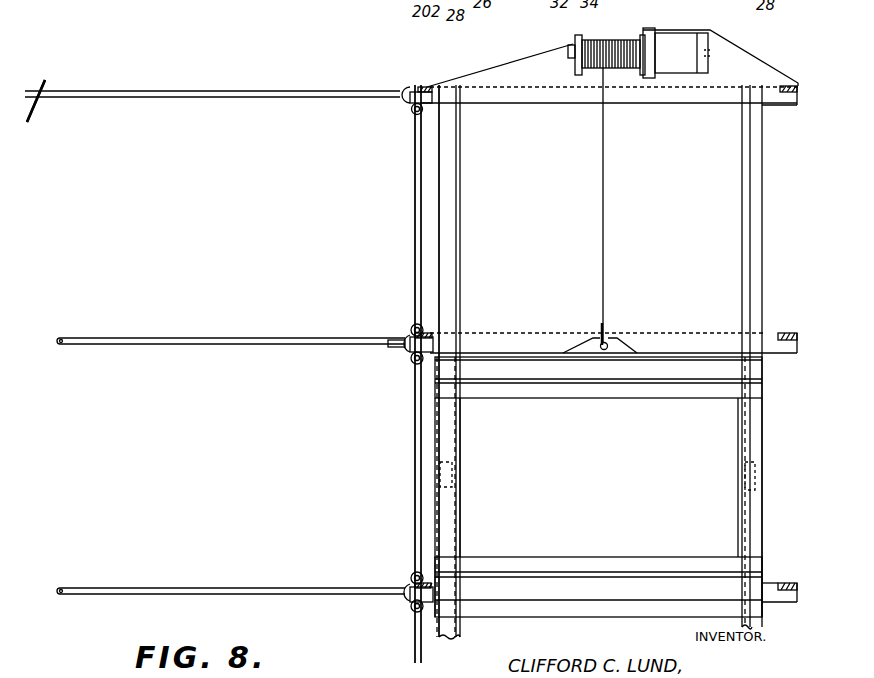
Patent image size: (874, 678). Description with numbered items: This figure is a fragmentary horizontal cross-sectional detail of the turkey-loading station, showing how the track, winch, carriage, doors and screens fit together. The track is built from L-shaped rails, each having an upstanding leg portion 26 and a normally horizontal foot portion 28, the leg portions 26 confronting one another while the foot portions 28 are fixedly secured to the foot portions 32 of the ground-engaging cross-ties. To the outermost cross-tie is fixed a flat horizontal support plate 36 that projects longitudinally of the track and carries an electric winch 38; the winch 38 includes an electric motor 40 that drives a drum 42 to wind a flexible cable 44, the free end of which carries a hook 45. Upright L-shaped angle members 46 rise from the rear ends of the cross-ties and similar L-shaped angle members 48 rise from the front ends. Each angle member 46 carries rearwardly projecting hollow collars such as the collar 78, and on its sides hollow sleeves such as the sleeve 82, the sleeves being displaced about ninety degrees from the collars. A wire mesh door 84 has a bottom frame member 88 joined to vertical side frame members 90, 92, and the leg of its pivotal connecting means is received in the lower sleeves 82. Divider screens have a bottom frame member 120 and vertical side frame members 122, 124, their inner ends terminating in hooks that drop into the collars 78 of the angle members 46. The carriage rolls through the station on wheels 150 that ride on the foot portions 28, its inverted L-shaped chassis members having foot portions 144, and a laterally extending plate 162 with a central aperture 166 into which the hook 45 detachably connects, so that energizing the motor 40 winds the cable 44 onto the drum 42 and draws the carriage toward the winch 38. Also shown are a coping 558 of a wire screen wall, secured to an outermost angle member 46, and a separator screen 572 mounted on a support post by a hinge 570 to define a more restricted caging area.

The upstanding leg portion 26 is at (461, 206).
The foot portion 28 is at (452, 229).
The foot portion of cross-tie 32 is at (540, 104).
The support plate 36 is at (760, 62).
The electric winch 38 is at (683, 28).
The electric motor 40 is at (676, 53).
The drum 42 is at (570, 42).
The flexible cable 44 is at (606, 160).
The hook 45 is at (607, 344).
The L-shaped angle member 46 is at (424, 87).
The L-shaped angle member 48 is at (800, 95).
The hollow collar 78 is at (407, 86).
The hollow sleeve 82 is at (409, 113).
The wire mesh door 84 is at (414, 207).
The bottom frame member 88 is at (415, 233).
The side frame member 90 is at (417, 117).
The side frame member 92 is at (425, 329).
The bottom frame member 120 is at (266, 338).
The side frame member 122 is at (62, 337).
The side frame member 124 is at (392, 349).
The foot portion 144 is at (460, 512).
The wheel 150 is at (458, 478).
The laterally-extending plate 162 is at (630, 350).
The aperture 166 is at (617, 346).
The coping 558 is at (211, 92).
The hinge 570 is at (44, 88).
The separator screen 572 is at (32, 117).